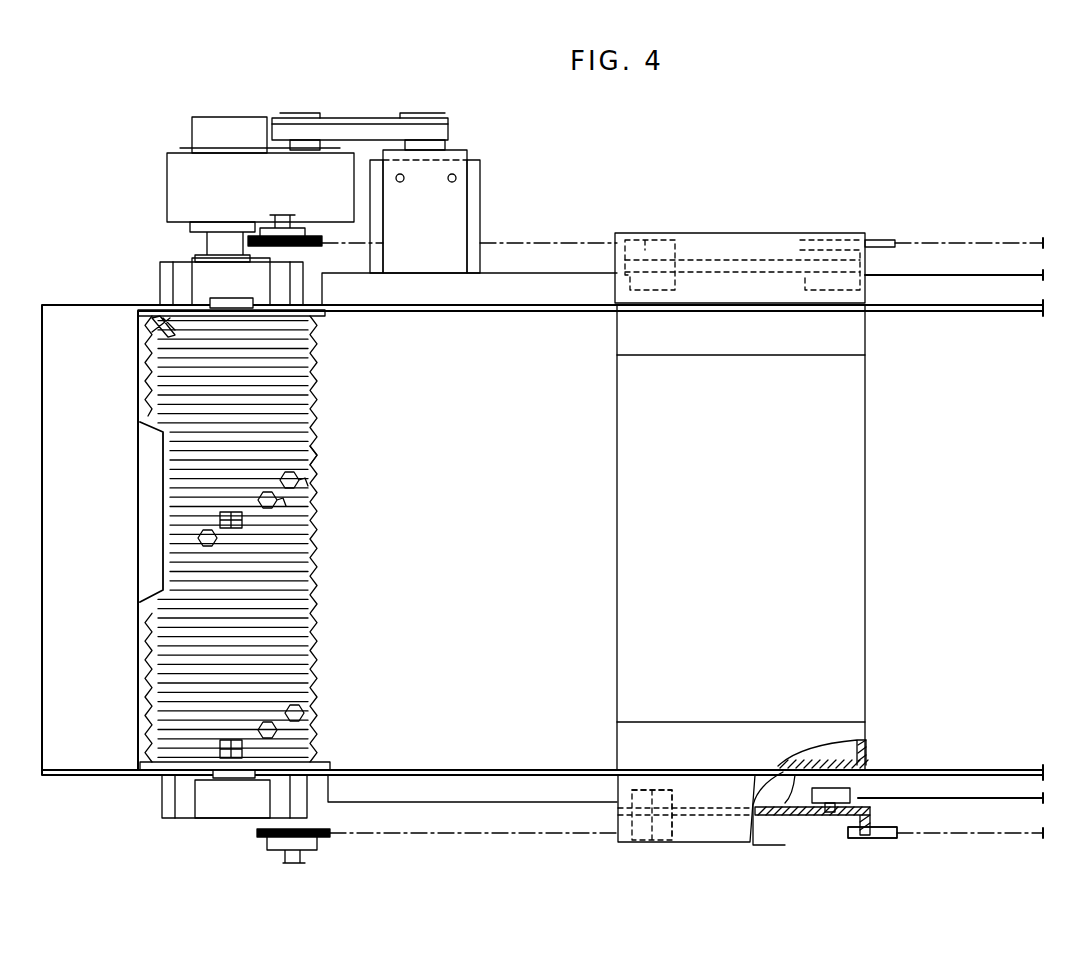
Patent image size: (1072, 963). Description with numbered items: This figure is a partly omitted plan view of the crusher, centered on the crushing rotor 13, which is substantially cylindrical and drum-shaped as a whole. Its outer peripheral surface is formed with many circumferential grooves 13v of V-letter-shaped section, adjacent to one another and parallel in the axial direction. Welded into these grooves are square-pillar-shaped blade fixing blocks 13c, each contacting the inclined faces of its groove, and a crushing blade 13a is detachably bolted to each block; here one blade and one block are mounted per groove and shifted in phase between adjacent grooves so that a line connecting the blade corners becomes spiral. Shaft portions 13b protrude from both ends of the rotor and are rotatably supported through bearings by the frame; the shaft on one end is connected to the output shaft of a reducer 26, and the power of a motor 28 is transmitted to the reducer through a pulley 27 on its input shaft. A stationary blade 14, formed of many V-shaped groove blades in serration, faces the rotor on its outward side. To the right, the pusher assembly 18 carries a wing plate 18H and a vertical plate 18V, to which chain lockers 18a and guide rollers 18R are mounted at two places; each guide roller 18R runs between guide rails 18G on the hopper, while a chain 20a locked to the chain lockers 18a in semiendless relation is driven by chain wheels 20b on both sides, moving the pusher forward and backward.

The crushing rotor 13 is at (333, 393).
The crushing blade 13a is at (300, 522).
The shaft portion 13b is at (230, 305).
The blade fixing block 13c is at (322, 500).
The circumferential groove 13v is at (315, 447).
The stationary blade 14 is at (322, 490).
The housing box 18 is at (865, 531).
The guide rail 18G is at (503, 292).
The wing plate 18H is at (708, 243).
The vertical plate 18V is at (775, 806).
The guide roller 18R is at (818, 812).
The chain locker 18a is at (660, 843).
The chain 20a is at (550, 238).
The chain wheel 20b is at (272, 232).
The reducer 26 is at (182, 201).
The pulley 27 is at (448, 128).
The motor 28 is at (450, 197).